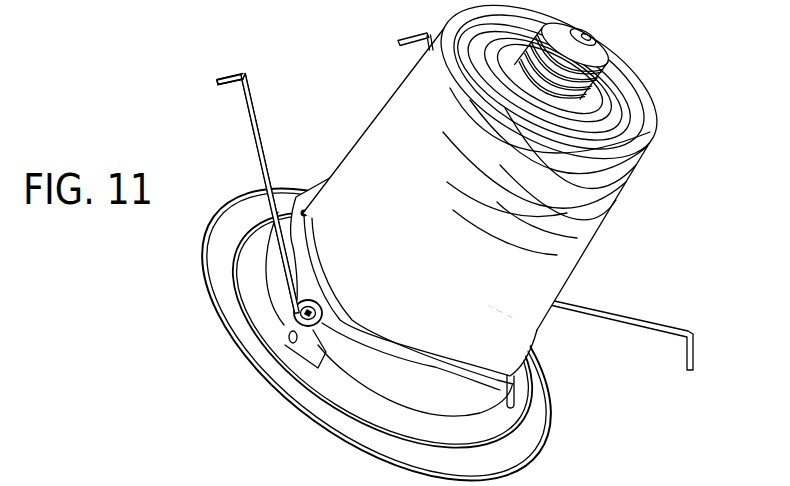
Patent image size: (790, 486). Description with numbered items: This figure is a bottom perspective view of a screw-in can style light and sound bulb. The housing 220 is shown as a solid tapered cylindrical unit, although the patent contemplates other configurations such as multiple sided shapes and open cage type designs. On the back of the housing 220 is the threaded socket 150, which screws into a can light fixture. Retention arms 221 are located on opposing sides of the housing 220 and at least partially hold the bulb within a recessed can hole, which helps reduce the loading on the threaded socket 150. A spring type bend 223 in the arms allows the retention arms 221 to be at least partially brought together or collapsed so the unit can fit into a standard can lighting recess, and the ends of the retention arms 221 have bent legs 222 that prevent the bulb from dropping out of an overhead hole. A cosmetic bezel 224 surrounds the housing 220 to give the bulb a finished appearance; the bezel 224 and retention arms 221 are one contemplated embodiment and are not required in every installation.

The threaded socket 150 is at (591, 37).
The housing 220 is at (387, 108).
The retention arms 221 is at (632, 315).
The bent legs 222 is at (230, 75).
The spring type bend 223 is at (290, 318).
The cosmetic bezel 224 is at (552, 390).